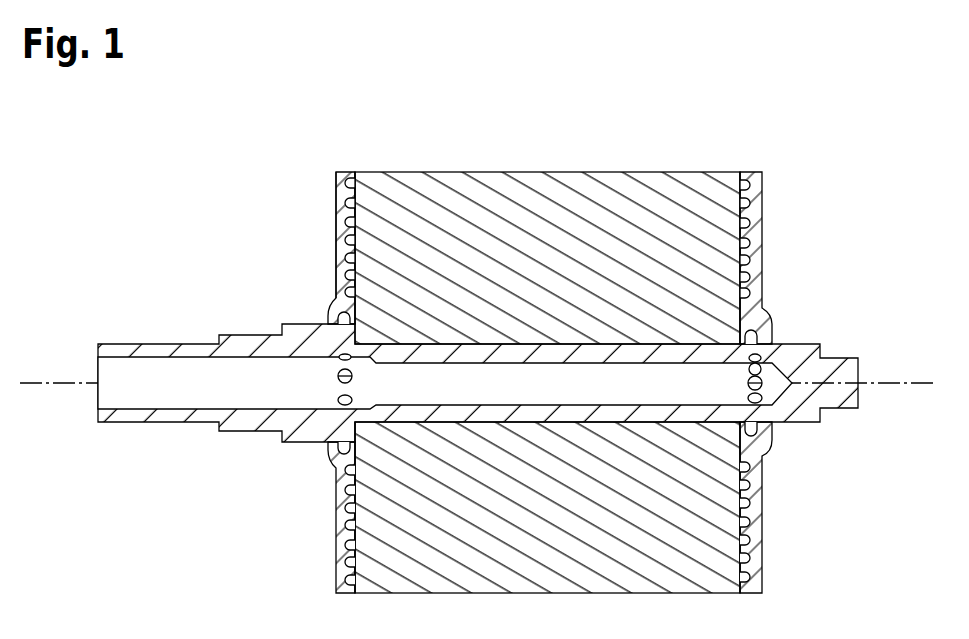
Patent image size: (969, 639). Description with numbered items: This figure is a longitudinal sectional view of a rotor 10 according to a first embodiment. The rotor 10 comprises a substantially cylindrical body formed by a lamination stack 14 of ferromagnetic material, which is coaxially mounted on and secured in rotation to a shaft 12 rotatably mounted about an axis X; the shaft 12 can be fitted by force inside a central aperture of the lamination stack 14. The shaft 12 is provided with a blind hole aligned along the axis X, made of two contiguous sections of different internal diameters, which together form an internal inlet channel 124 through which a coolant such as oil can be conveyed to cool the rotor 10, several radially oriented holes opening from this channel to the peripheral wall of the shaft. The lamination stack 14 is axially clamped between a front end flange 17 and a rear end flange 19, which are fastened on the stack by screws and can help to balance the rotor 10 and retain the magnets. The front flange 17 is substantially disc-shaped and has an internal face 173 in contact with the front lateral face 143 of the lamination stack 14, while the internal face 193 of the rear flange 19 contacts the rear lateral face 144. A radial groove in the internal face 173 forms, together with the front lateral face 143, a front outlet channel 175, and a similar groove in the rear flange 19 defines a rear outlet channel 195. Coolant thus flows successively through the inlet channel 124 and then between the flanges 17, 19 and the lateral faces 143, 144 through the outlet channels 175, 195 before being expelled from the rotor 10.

The rotor 10 is at (200, 207).
The shaft 12 is at (142, 432).
The inlet channel 124 is at (143, 375).
The lamination stack 14 is at (568, 192).
The front lateral face 143 is at (355, 458).
The rear lateral face 144 is at (758, 448).
The front end flange 17 is at (335, 565).
The internal face 173 is at (357, 220).
The front outlet channel 175 is at (336, 270).
The rear end flange 19 is at (765, 192).
The internal face 193 is at (738, 200).
The rear outlet channel 195 is at (748, 222).
The axis X is at (905, 385).